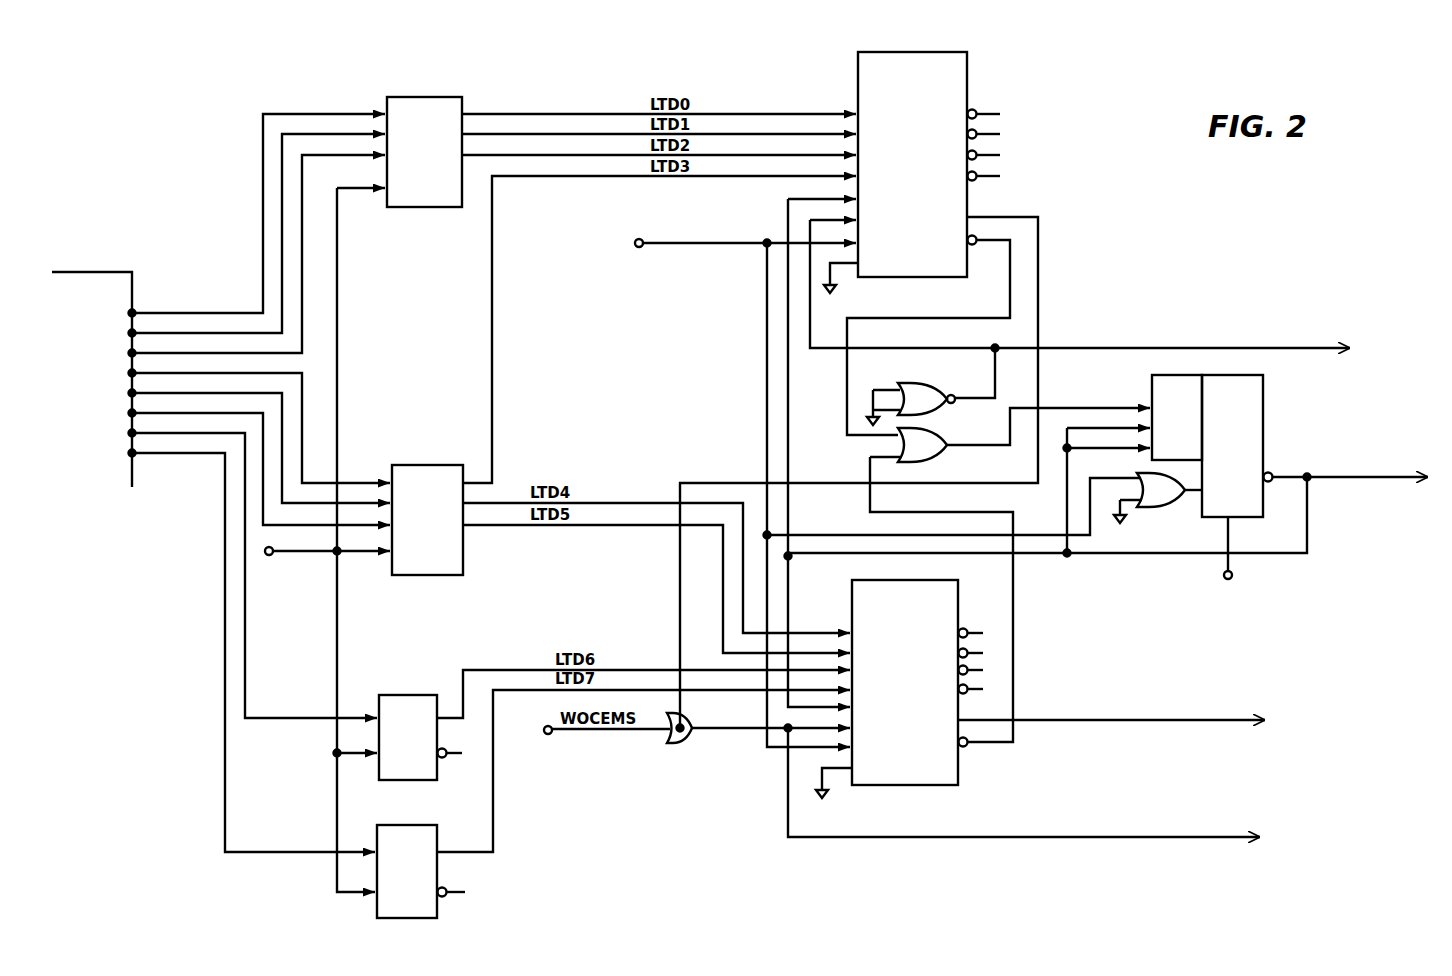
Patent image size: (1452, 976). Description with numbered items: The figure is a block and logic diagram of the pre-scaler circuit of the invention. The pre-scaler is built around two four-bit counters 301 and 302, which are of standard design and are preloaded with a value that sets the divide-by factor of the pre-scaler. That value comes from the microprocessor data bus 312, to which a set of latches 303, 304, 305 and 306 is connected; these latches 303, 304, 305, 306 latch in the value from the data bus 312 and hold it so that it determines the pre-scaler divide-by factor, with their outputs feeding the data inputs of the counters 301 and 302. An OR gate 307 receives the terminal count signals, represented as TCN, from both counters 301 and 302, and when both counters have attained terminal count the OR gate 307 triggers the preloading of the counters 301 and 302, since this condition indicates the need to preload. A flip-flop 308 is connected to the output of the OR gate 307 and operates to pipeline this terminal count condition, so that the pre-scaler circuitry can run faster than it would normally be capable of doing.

The 4-bit counter 301 is at (870, 50).
The 4-bit counter 302 is at (958, 773).
The latch 303 is at (440, 96).
The latch 304 is at (413, 465).
The latch 305 is at (400, 693).
The latch 306 is at (437, 913).
The OR gate 307 is at (942, 455).
The flip-flop 308 is at (1268, 395).
The microprocessor data bus 312 is at (136, 272).